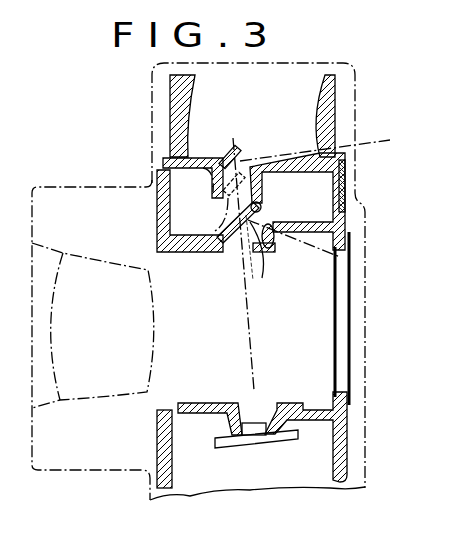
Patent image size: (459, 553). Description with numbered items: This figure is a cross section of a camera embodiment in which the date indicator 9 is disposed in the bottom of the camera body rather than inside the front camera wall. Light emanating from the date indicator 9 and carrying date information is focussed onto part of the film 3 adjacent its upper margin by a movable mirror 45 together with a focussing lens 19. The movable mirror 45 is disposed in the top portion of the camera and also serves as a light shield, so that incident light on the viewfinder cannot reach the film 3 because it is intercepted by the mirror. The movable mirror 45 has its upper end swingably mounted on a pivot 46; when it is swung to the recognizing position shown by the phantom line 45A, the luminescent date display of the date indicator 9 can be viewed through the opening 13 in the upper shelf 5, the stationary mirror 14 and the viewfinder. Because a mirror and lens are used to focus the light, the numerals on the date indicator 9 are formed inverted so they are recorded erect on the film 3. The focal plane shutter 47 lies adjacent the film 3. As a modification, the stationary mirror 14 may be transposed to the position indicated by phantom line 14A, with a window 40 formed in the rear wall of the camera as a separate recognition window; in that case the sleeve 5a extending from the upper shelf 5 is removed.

The film 3 is at (352, 293).
The upper shelf 5 is at (302, 173).
The sleeve 5a is at (224, 166).
The date indicator 9 is at (247, 428).
The opening 13 is at (240, 169).
The stationary mirror 14 is at (234, 146).
The phantom line position of stationary mirror 14A is at (225, 231).
The focussing lens 19 is at (275, 247).
The window 40 is at (347, 185).
The movable mirror 45 is at (228, 246).
The phantom line position of movable mirror 45A is at (258, 264).
The pivot 46 is at (261, 207).
The focal plane shutter 47 is at (333, 310).